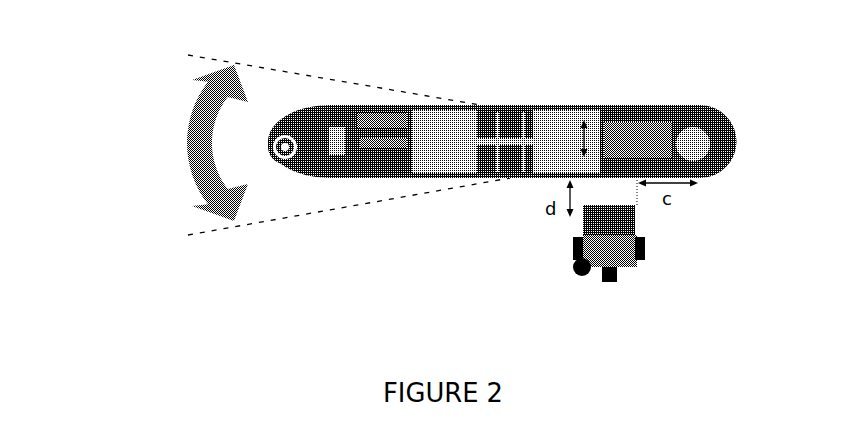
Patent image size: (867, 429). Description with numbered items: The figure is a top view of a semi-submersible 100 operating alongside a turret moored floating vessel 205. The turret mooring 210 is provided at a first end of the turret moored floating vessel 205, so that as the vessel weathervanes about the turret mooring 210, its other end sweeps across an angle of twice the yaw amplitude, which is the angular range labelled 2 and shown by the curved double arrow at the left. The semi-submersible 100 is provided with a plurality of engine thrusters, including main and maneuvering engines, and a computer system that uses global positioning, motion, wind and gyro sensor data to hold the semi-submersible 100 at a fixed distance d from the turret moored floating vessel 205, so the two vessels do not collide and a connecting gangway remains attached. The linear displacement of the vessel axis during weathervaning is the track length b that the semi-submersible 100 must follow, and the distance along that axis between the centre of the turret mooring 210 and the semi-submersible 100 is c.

The angular sweep range 2 is at (188, 138).
The turret moored floating vessel 205 is at (587, 85).
The turret mooring 210 is at (722, 117).
The semi-submersible 100 is at (618, 268).